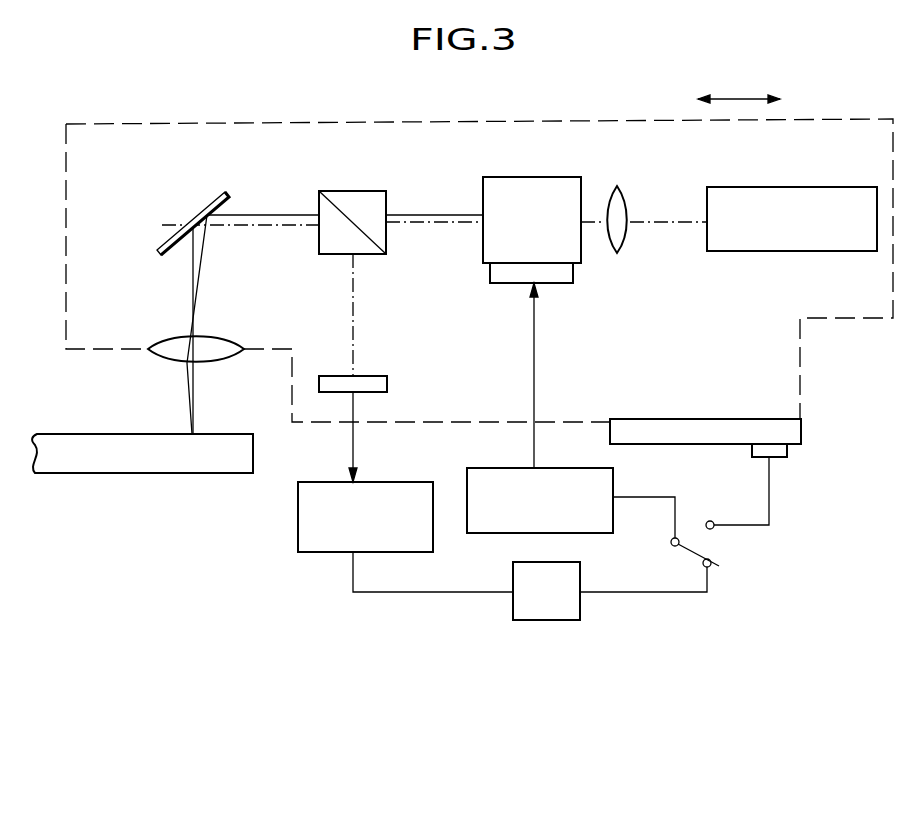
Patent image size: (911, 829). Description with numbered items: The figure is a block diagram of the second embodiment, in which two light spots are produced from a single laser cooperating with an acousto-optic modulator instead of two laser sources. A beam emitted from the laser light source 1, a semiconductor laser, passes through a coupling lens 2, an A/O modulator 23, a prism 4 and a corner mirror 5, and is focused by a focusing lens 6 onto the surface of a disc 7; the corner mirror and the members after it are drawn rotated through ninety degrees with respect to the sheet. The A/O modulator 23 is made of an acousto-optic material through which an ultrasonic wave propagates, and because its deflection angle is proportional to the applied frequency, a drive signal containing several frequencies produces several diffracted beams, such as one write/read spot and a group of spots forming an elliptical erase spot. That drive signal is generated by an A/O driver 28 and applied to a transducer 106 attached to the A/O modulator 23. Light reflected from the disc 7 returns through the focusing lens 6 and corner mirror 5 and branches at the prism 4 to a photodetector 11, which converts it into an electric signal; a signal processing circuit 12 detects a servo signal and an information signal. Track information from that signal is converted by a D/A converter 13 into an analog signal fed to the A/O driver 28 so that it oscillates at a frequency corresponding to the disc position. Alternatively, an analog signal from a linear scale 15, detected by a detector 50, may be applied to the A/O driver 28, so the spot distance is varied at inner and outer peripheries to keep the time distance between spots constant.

The laser light source 1 is at (790, 187).
The coupling lens 2 is at (620, 186).
The prism 4 is at (362, 191).
The corner mirror 5 is at (215, 196).
The focusing lens 6 is at (178, 336).
The disc 7 is at (118, 434).
The photodetector 11 is at (378, 376).
The signal processing circuit 12 is at (396, 482).
The D/A converter 13 is at (512, 571).
The linear scale 15 is at (782, 418).
The A/O modulator 23 is at (546, 177).
The A/O driver 28 is at (493, 468).
The detector 50 is at (790, 447).
The transducer 106 is at (562, 284).